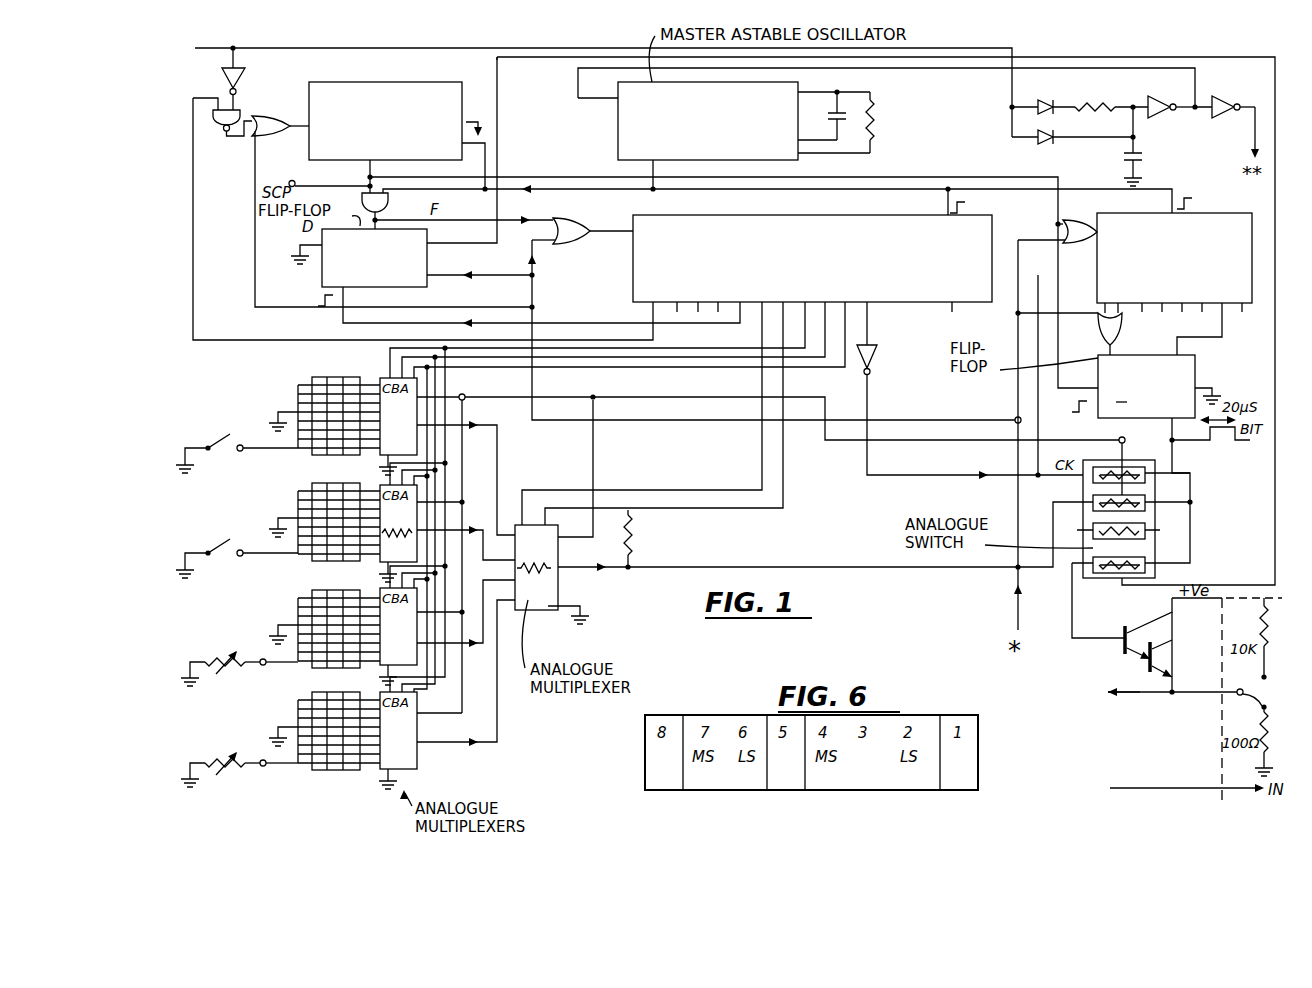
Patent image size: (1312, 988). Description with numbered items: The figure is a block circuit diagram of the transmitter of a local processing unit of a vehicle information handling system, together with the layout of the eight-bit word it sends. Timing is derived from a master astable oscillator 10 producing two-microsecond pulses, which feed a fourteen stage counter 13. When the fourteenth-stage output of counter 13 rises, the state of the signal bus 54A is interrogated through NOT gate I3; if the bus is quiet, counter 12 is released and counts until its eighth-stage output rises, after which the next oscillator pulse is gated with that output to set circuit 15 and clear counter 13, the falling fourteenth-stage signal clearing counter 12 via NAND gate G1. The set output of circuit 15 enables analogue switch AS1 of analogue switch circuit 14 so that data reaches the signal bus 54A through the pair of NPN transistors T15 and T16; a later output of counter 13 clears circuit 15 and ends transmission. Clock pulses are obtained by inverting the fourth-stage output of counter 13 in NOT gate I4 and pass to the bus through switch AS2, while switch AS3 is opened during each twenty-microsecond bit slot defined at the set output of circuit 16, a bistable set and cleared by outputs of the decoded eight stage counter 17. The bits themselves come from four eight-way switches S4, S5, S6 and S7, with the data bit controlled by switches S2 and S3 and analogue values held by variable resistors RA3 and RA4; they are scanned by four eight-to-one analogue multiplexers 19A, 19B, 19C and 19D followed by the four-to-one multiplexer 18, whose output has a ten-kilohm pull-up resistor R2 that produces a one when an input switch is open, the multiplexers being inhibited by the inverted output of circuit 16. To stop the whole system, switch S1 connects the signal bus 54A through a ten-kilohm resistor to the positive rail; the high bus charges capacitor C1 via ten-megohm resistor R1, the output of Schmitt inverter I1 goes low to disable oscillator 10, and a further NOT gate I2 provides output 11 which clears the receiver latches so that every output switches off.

The master astable oscillator 10 is at (708, 121).
The output of NOT gate I2 11 is at (1244, 133).
The counter 12 is at (378, 96).
The fourteen stage counter 13 is at (901, 268).
The analogue switch circuit 14 is at (1155, 511).
The circuit 15 is at (336, 266).
The circuit 16 is at (1180, 373).
The counter 17 is at (1216, 237).
The four to one analogue multiplexer 18 is at (548, 588).
The eight to one analogue multiplexer 19A is at (398, 426).
The eight to one analogue multiplexer 19B is at (398, 533).
The eight to one analogue multiplexer 19C is at (398, 636).
The eight to one analogue multiplexer 19D is at (408, 757).
The signal bus 54A is at (478, 48).
The NOT gate I1 is at (1171, 116).
The NOT gate I2 is at (1225, 116).
The NOT gate I3 is at (241, 89).
The NOT gate I4 is at (873, 343).
The NAND gate G1 is at (218, 127).
The resistor R1 is at (1094, 107).
The pull up resistor R2 is at (629, 537).
The capacitor C1 is at (1144, 168).
The switch S1 is at (1247, 706).
The switch S2 is at (237, 454).
The switch S3 is at (237, 559).
The eight-way switch S4 is at (324, 406).
The eight-way switch S5 is at (324, 512).
The eight-way switch S6 is at (324, 619).
The eight-way switch S7 is at (324, 722).
The variable resistor RA3 is at (239, 672).
The variable resistor RA4 is at (239, 773).
The NPN transistor T15 is at (1122, 646).
The NPN transistor T16 is at (1147, 667).
The analogue switch AS1 is at (1110, 574).
The analogue switch AS2 is at (1122, 468).
The analogue switch AS3 is at (1100, 504).